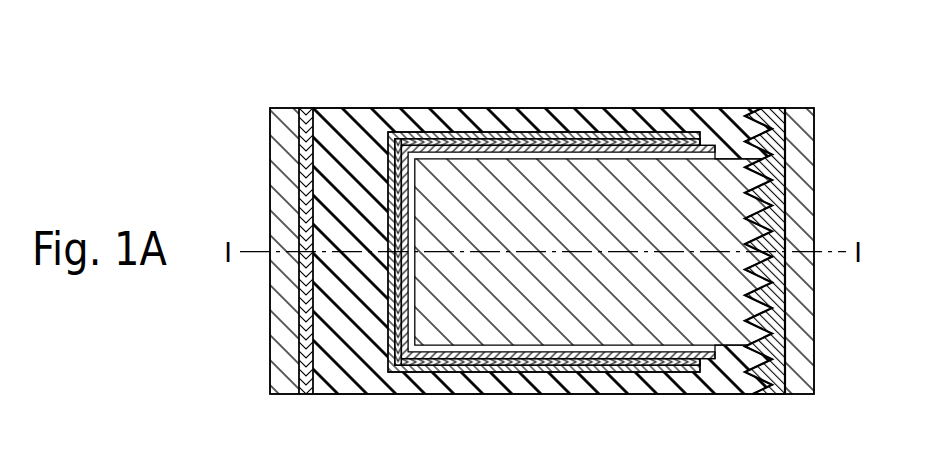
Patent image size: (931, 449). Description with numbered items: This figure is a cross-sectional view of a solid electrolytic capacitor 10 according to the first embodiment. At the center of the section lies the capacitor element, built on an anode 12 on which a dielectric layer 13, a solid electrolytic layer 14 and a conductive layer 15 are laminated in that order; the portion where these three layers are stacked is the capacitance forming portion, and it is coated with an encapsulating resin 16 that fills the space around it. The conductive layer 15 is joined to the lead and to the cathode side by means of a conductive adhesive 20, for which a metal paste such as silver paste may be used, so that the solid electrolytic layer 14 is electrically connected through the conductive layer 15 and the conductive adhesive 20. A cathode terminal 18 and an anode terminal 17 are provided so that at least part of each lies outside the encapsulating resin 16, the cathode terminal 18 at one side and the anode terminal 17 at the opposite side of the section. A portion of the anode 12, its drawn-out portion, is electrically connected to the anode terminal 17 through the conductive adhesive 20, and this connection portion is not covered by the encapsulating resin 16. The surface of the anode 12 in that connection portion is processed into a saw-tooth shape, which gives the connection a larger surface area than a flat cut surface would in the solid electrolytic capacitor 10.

The solid electrolytic capacitor 10 is at (251, 93).
The anode 12 is at (718, 172).
The dielectric layer 13 is at (575, 150).
The solid electrolytic layer 14 is at (528, 141).
The conductive layer 15 is at (477, 135).
The encapsulating resin 16 is at (647, 108).
The anode terminal 17 is at (814, 182).
The cathode terminal 18 is at (270, 181).
The conductive adhesive 20 is at (304, 108).